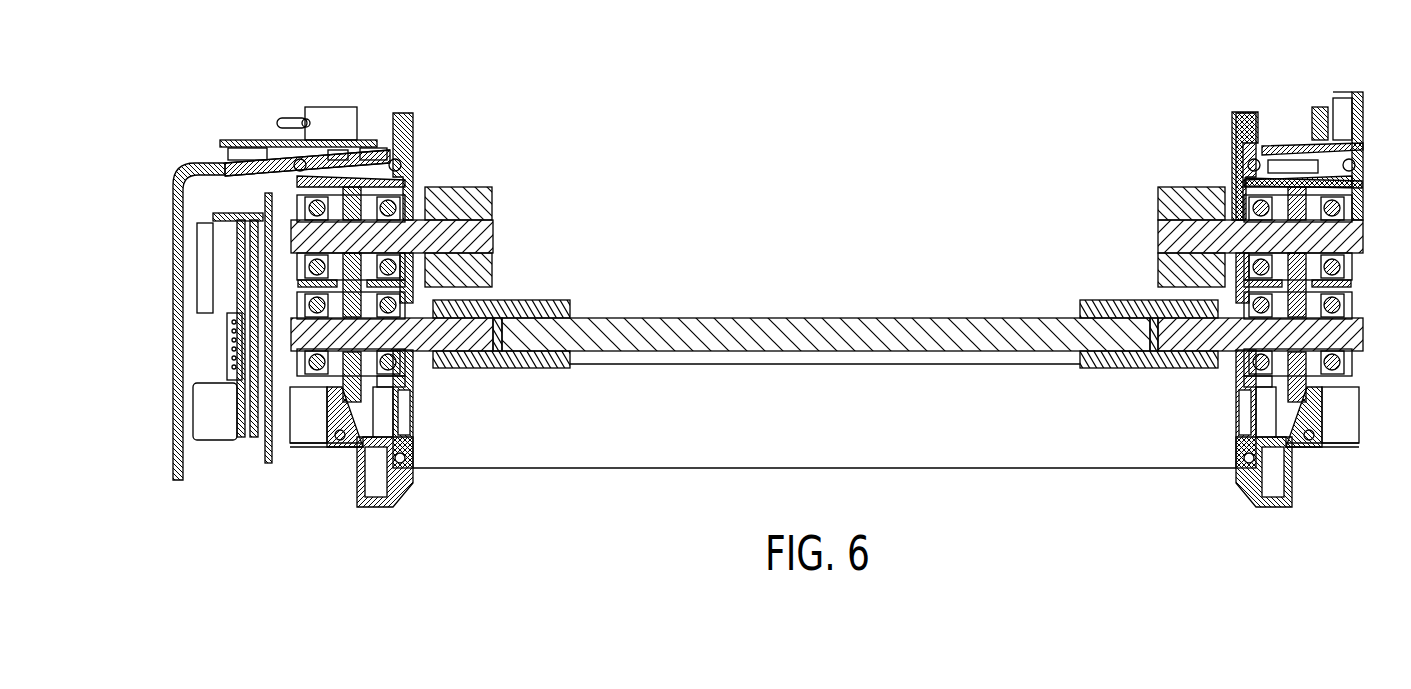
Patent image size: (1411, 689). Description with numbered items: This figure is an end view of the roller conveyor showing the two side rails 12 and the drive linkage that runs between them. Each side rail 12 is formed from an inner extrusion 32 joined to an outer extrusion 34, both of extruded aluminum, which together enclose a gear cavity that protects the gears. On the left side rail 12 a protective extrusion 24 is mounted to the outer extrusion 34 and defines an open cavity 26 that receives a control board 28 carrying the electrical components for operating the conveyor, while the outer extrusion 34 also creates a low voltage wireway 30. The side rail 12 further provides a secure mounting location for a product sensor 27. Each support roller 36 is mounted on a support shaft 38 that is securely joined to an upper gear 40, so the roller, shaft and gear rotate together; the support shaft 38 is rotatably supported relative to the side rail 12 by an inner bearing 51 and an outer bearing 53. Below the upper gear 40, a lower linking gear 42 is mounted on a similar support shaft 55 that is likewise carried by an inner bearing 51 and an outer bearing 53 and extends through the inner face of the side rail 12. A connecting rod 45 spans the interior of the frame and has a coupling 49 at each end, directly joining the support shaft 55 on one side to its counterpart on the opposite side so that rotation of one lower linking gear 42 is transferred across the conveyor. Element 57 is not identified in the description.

The side rail 12 is at (387, 82).
The protective extrusion 24 is at (205, 193).
The open cavity 26 is at (200, 168).
The product sensor 27 is at (340, 120).
The control board 28 is at (213, 350).
The low voltage wireway 30 is at (317, 427).
The inner extrusion 32 is at (400, 483).
The outer extrusion 34 is at (307, 450).
The support roller 36 is at (450, 200).
The support shaft 38 is at (470, 232).
The upper gear 40 is at (350, 203).
The lower linking gear 42 is at (1297, 388).
The connecting rod 45 is at (845, 338).
The coupling 49 is at (530, 300).
The inner bearing 51 is at (407, 200).
The outer bearing 53 is at (300, 203).
The support shaft 55 is at (472, 338).
The retainer 57 is at (407, 362).